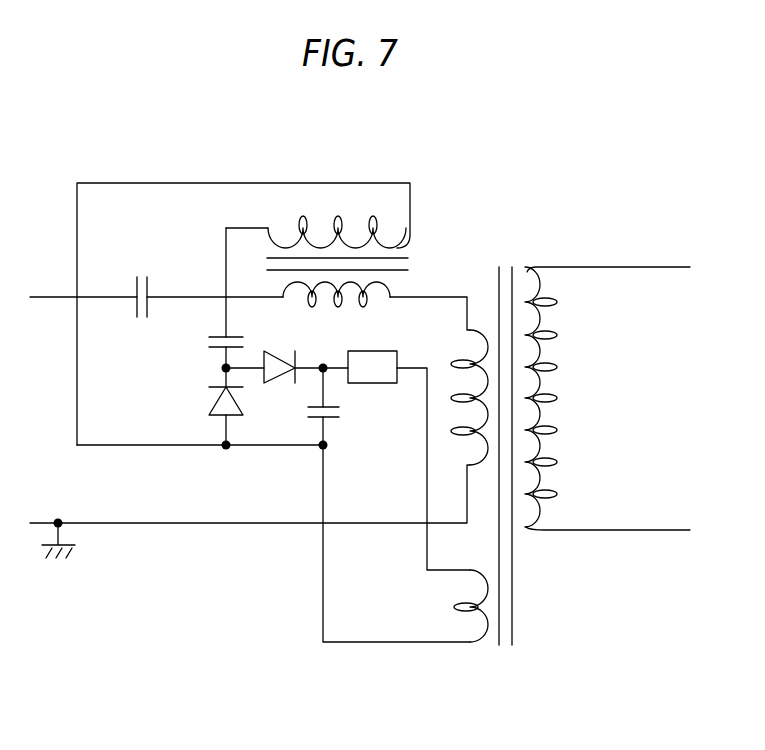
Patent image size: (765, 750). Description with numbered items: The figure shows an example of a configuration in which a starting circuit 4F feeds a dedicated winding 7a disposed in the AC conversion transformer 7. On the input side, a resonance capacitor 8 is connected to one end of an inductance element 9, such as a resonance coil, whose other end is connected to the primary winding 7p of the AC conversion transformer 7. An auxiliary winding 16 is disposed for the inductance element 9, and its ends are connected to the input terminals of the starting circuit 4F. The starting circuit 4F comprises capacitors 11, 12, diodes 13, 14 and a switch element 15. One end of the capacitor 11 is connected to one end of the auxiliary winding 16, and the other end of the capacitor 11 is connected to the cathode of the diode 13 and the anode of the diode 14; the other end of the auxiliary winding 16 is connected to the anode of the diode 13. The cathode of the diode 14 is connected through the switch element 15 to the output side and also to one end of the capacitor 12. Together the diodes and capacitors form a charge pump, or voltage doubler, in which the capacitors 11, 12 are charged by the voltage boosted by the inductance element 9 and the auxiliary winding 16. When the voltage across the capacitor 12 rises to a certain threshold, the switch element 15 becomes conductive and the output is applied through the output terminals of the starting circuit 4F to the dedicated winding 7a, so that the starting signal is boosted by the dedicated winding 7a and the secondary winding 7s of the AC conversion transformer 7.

The AC conversion transformer 7 is at (463, 222).
The primary winding 7p is at (482, 332).
The secondary winding 7s is at (527, 283).
The dedicated winding 7a is at (473, 645).
The resonance capacitor 8 is at (148, 280).
The inductance element 9 is at (390, 290).
The capacitor 11 is at (216, 349).
The capacitor 12 is at (334, 418).
The diode 13 is at (216, 422).
The diode 14 is at (282, 352).
The switch element 15 is at (381, 351).
The auxiliary winding 16 is at (407, 245).
The starting circuit 4F is at (265, 452).